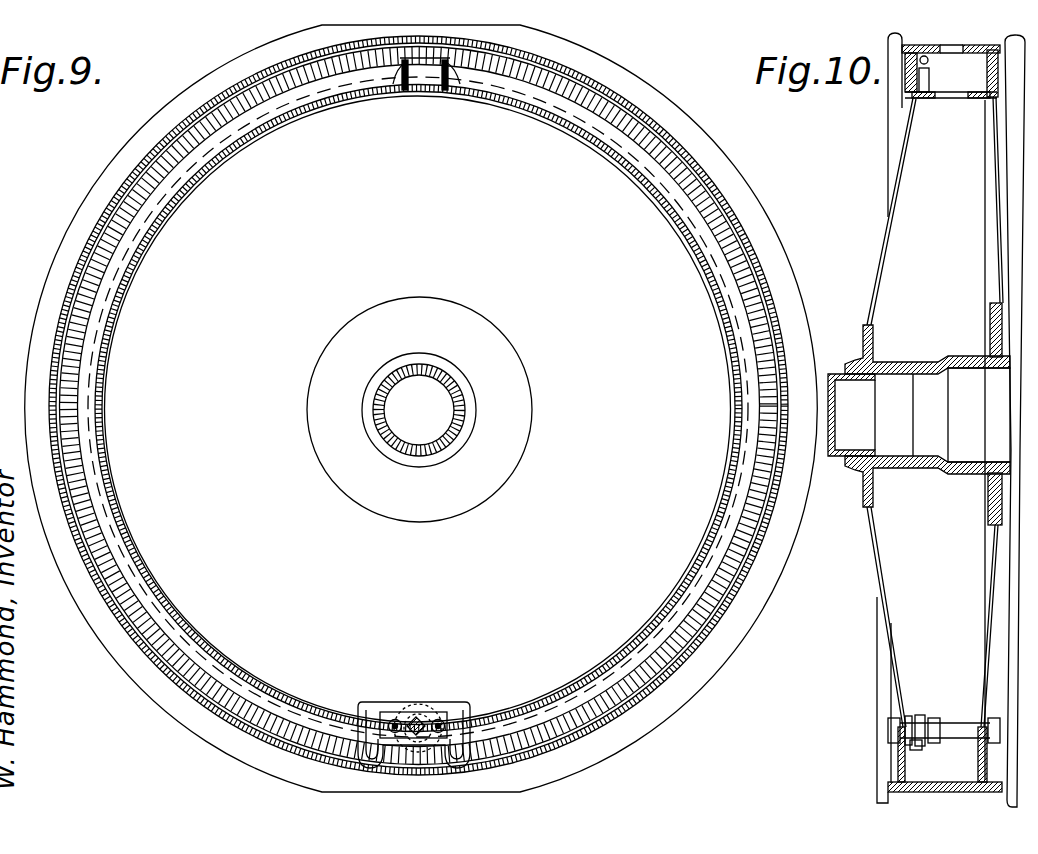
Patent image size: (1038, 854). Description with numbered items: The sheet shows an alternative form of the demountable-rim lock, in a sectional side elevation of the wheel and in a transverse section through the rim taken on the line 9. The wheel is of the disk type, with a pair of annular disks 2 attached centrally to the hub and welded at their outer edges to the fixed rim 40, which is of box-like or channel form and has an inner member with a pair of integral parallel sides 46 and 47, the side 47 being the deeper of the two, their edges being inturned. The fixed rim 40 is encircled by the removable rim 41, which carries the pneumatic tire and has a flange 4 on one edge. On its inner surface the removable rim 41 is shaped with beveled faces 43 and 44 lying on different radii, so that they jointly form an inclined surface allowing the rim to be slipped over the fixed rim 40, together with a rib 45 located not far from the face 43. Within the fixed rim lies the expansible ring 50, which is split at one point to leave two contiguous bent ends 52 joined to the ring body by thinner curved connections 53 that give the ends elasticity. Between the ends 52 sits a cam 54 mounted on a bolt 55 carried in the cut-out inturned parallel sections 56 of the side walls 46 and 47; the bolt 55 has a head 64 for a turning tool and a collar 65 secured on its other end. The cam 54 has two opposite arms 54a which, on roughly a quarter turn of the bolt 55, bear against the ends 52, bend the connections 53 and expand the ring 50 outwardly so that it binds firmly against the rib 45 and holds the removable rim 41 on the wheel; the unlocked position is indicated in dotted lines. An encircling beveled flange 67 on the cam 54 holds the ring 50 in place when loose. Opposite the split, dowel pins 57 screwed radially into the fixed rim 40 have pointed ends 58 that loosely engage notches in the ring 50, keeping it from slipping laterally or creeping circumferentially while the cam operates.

In FIG. 9, the annular disk 2 is at (418, 409).
In FIG. 10, the annular disk 2 is at (996, 182).
In FIG. 10, the flange 4 is at (1000, 82).
In FIG. 10, the section line 9 is at (922, 33).
In FIG. 9, the fixed rim 40 is at (505, 93).
In FIG. 10, the fixed rim 40 is at (982, 98).
In FIG. 9, the removable rim 41 is at (667, 688).
In FIG. 10, the removable rim 41 is at (985, 52).
In FIG. 10, the beveled face 43 is at (907, 58).
In FIG. 10, the beveled face 44 is at (945, 801).
In FIG. 10, the rib 45 is at (958, 76).
In FIG. 10, the parallel side 46 is at (908, 90).
In FIG. 9, the parallel side 47 is at (596, 126).
In FIG. 10, the parallel side 47 is at (990, 748).
In FIG. 9, the expansible ring 50 is at (330, 75).
In FIG. 10, the expansible ring 50 is at (905, 72).
In FIG. 9, the bent end 52 is at (380, 712).
In FIG. 10, the bent end 52 is at (912, 722).
In FIG. 9, the curved connection 53 is at (413, 741).
In FIG. 9, the cam 54 is at (450, 700).
In FIG. 10, the cam arm 54a is at (936, 728).
In FIG. 9, the bolt 55 is at (420, 720).
In FIG. 9, the inturned parallel section 56 is at (460, 706).
In FIG. 9, the dowel pin 57 is at (446, 86).
In FIG. 10, the dowel pin 57 is at (921, 98).
In FIG. 9, the pointed end 58 is at (397, 83).
In FIG. 10, the head 64 is at (890, 733).
In FIG. 10, the collar 65 is at (1000, 733).
In FIG. 10, the encircling flange 67 is at (922, 746).